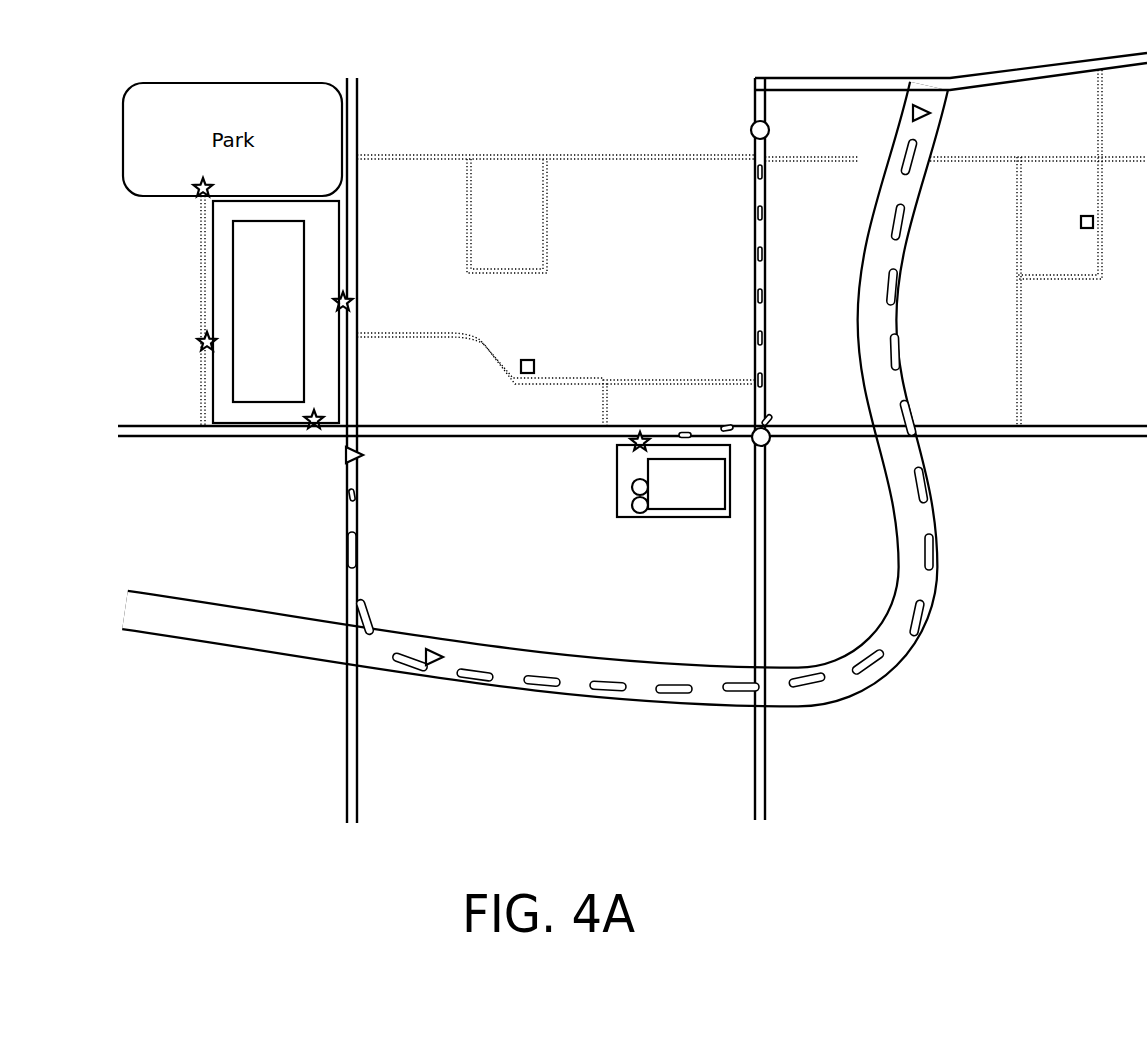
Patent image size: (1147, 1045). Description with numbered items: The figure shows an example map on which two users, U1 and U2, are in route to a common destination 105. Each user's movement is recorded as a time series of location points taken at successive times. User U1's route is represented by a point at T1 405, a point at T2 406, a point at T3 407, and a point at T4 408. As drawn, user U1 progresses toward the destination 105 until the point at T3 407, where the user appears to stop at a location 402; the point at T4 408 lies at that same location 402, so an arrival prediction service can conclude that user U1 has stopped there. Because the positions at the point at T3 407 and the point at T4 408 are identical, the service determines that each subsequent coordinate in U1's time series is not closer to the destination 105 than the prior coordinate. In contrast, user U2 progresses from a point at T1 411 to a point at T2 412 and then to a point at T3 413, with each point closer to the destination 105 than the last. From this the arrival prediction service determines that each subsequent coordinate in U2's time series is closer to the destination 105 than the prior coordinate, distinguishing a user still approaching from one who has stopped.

The destination 105 is at (276, 312).
The location 402 is at (673, 481).
The point at T1 405 is at (729, 128).
The point at T2 406 is at (834, 497).
The point at T3 407 is at (589, 553).
The point at T4 408 is at (682, 590).
The point at T1 411 is at (1001, 158).
The point at T2 412 is at (486, 740).
The point at T3 413 is at (436, 502).